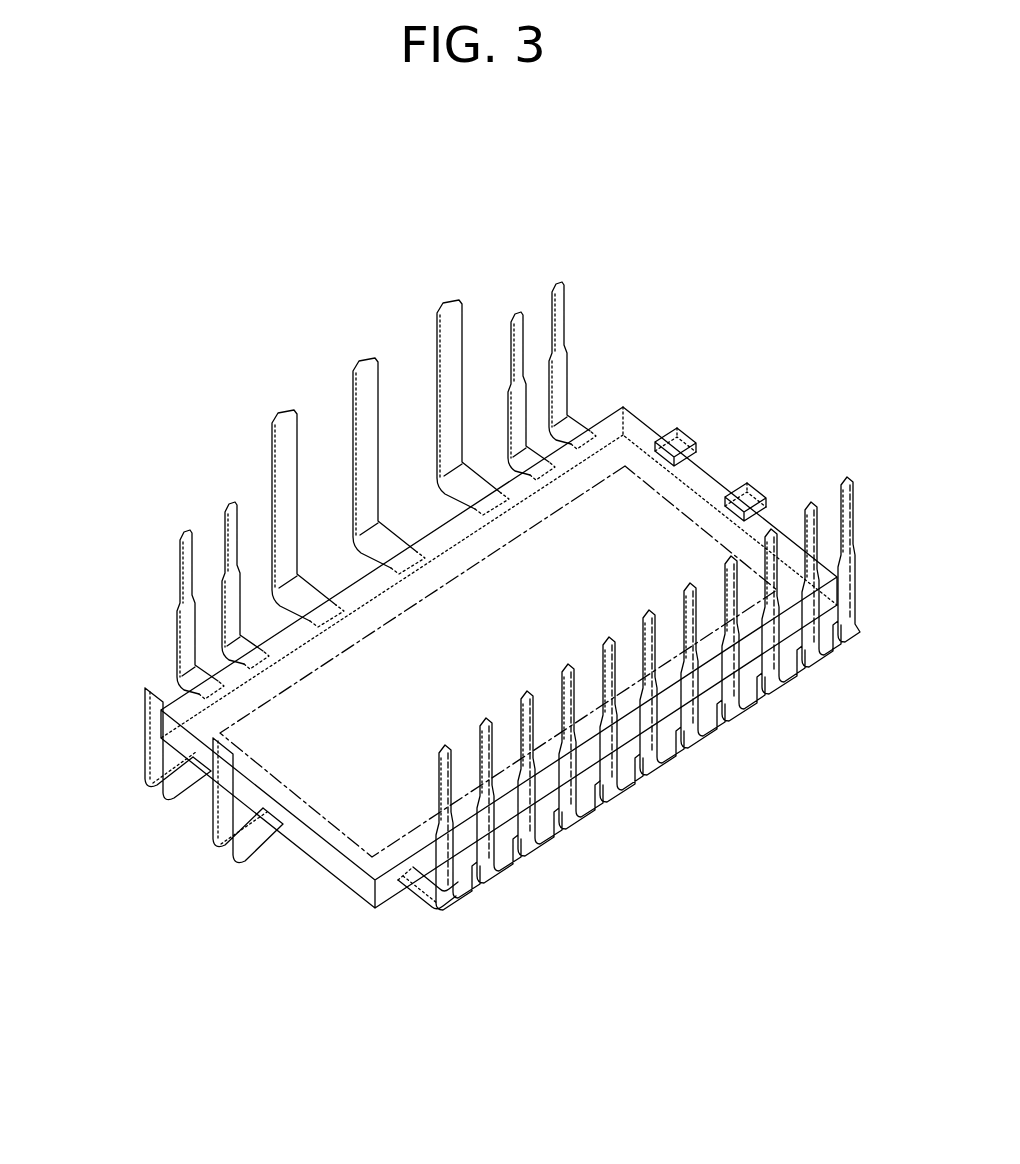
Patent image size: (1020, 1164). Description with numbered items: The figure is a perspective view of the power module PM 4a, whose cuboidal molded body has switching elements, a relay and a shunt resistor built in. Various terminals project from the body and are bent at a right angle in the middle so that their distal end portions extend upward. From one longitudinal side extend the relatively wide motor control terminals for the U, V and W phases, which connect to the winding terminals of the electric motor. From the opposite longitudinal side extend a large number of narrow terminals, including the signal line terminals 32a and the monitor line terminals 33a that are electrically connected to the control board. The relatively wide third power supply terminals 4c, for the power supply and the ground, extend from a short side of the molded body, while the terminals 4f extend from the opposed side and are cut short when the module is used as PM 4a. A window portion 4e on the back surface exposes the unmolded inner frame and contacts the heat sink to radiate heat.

The power module (PM) 4a is at (643, 428).
The terminals for power supply terminals 4f is at (752, 484).
The third power supply terminals 4c is at (217, 835).
The window portion 4e is at (368, 850).
The signal line terminals 32a is at (757, 690).
The monitor line terminals 33a is at (497, 868).